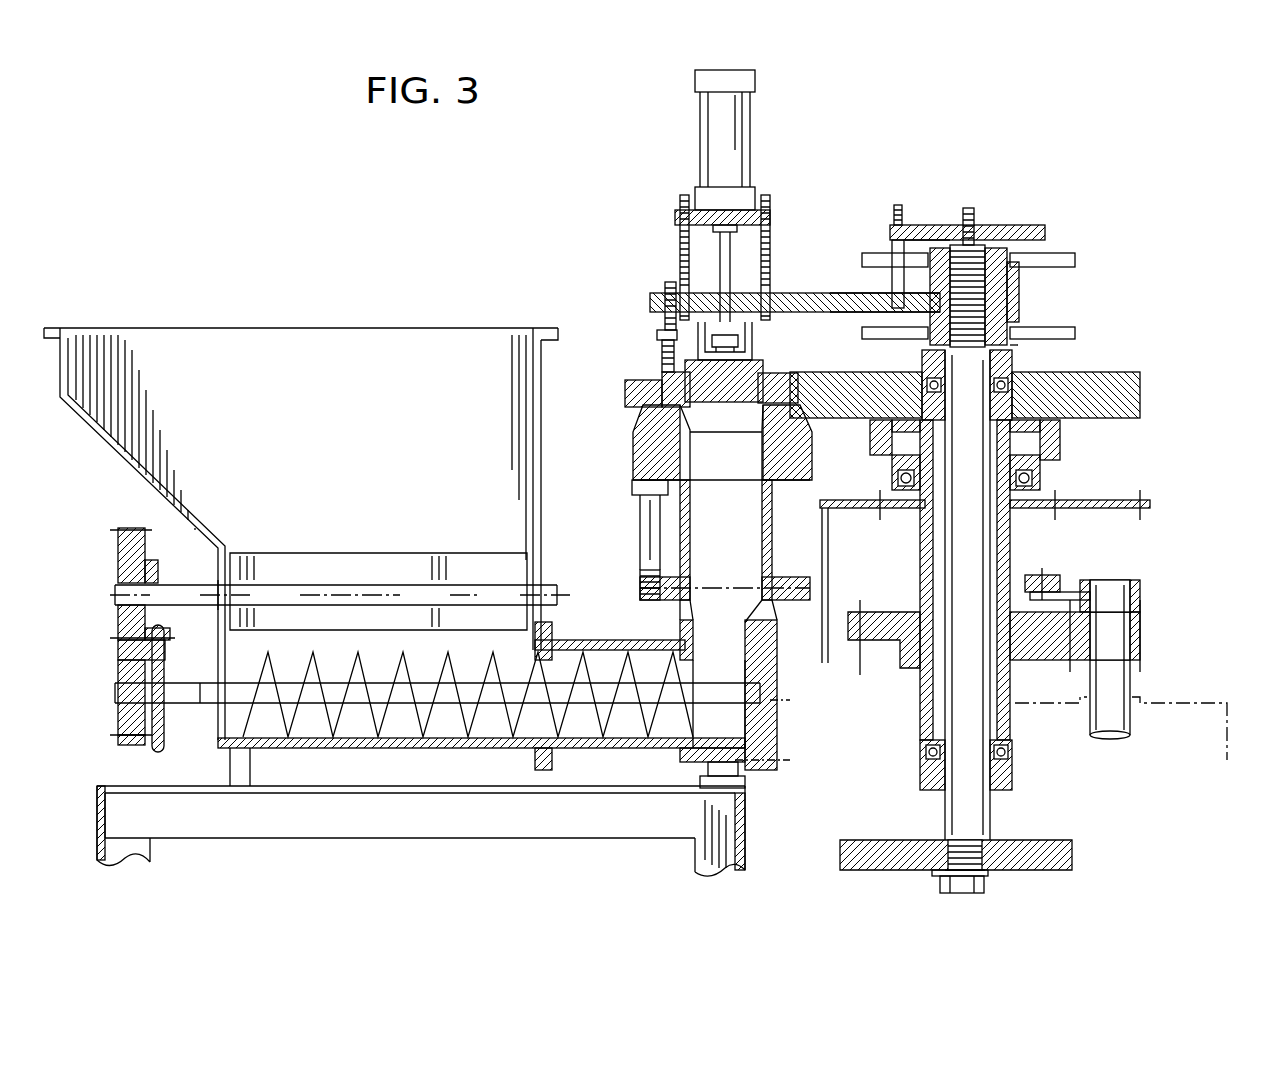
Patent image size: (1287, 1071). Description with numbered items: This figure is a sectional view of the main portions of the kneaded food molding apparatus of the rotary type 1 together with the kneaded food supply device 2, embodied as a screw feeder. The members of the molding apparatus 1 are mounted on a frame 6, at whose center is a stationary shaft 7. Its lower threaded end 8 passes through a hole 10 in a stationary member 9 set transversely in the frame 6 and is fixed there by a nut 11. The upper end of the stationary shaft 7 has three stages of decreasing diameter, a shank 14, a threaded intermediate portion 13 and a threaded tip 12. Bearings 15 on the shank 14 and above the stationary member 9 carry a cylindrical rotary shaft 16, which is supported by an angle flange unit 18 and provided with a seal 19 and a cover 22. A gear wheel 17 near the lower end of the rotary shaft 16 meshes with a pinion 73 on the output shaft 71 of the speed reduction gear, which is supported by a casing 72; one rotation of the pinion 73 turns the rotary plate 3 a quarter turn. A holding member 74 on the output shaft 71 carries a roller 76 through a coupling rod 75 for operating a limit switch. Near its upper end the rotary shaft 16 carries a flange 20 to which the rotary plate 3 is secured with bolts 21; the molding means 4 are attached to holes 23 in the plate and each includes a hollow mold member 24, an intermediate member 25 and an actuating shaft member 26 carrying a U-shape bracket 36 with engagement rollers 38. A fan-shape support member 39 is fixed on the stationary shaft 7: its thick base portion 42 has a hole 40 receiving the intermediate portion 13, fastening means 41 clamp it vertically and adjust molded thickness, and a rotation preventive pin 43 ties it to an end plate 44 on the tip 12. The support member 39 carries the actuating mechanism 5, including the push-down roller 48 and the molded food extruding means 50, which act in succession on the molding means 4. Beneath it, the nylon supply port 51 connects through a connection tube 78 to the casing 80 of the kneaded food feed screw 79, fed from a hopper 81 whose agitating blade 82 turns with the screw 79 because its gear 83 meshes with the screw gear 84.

The kneaded food molding apparatus of the rotary type 1 is at (1108, 182).
The kneaded food supply device 2 is at (350, 300).
The rotary plate 3 is at (845, 375).
The molding means 4 is at (762, 300).
The actuating mechanism 5 is at (648, 335).
The frame 6 is at (1132, 505).
The stationary shaft 7 is at (968, 520).
The lower threaded end 8 is at (955, 845).
The stationary member 9 is at (855, 850).
The hole 10 is at (945, 860).
The nut 11 is at (968, 884).
The tip 12 is at (965, 230).
The intermediate portion 13 is at (978, 245).
The shank 14 is at (967, 595).
The bearings 15 is at (1015, 380).
The cylindrical rotary shaft 16 is at (925, 565).
The gear wheel 17 is at (882, 640).
The angle flange unit 18 is at (1040, 480).
The seal 19 is at (1055, 450).
The flange 20 is at (1065, 420).
The bolts 21 is at (882, 380).
The cover 22 is at (1018, 345).
The holes 23 is at (640, 415).
The hollow mold member 24 is at (790, 383).
The intermediate member 25 is at (765, 362).
The actuating shaft member 26 is at (628, 392).
The U-shape bracket 36 is at (720, 320).
The engagement rollers 38 is at (705, 300).
The support member 39 is at (650, 328).
The hole 40 is at (1005, 290).
The fastening means 41 is at (1032, 237).
The base portion 42 is at (900, 235).
The rotation preventive pin 43 is at (895, 270).
The end plate 44 is at (920, 235).
The push-down roller 48 is at (657, 352).
The molded food extruding means 50 is at (770, 180).
The supply port 51 is at (810, 453).
The output shaft 71 is at (1130, 660).
The casing 72 is at (1149, 717).
The pinion 73 is at (1140, 630).
The holding member 74 is at (1130, 582).
The coupling rod 75 is at (1068, 596).
The roller 76 is at (1033, 578).
The connection tube 78 is at (770, 505).
The kneaded food feed screw 79 is at (610, 690).
The casing 80 is at (775, 625).
The hopper 81 is at (158, 348).
The agitating blade 82 is at (480, 565).
The gear 83 is at (125, 560).
The gear 84 is at (118, 706).